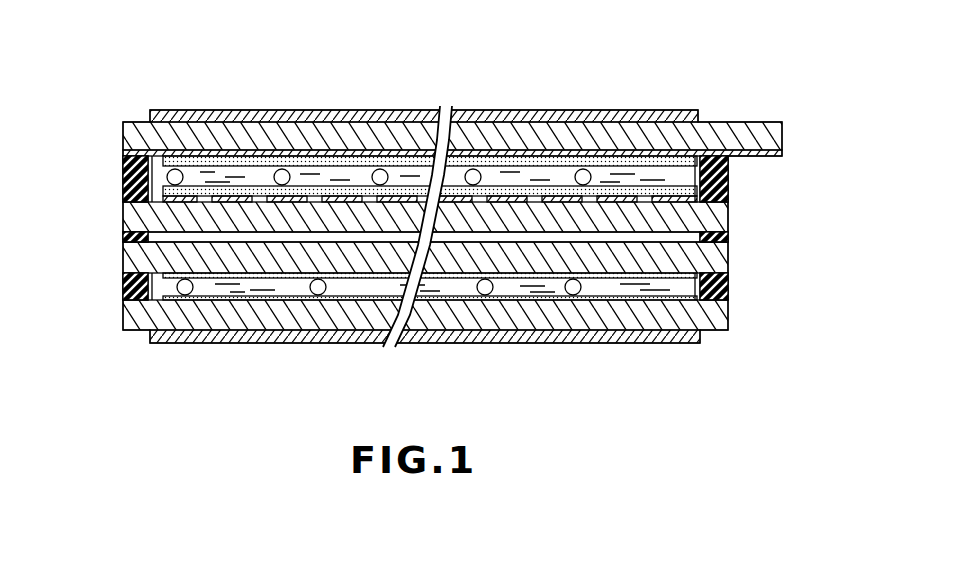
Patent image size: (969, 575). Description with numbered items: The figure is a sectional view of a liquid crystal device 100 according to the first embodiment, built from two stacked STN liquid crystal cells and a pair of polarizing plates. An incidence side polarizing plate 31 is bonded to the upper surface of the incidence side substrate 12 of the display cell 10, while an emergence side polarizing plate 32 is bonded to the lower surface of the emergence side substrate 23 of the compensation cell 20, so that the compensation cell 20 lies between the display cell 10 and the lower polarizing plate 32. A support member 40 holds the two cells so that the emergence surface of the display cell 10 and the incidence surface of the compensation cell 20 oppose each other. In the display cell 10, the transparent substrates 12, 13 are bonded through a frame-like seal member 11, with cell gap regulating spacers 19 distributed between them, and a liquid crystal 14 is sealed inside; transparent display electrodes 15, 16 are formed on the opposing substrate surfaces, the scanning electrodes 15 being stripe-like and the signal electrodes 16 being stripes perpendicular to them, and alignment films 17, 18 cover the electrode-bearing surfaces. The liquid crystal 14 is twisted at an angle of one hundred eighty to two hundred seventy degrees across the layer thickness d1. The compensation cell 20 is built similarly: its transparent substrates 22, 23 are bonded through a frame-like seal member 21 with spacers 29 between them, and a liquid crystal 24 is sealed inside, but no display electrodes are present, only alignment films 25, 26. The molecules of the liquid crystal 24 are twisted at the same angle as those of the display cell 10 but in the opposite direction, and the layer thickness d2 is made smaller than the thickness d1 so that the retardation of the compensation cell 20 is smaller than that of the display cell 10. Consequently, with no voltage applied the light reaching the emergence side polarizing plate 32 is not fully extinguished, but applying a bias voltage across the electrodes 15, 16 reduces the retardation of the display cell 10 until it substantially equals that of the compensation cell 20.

The liquid crystal device 100 is at (755, 106).
The display cell 10 is at (452, 129).
The compensation cell 20 is at (440, 322).
The seal member 11 is at (728, 190).
The incidence side substrate 12 is at (724, 135).
The transparent substrate 13 is at (728, 220).
The liquid crystal 14 is at (615, 190).
The display electrodes 15 is at (487, 153).
The display electrodes 16 is at (345, 165).
The alignment film 17 is at (535, 160).
The alignment film 18 is at (405, 170).
The cell gap regulating spacers 19 is at (282, 168).
The seal member 21 is at (728, 292).
The transparent substrate 22 is at (728, 258).
The emergence side substrate 23 is at (715, 338).
The liquid crystal 24 is at (655, 300).
The alignment film 25 is at (448, 280).
The alignment film 26 is at (525, 300).
The spacers 29 is at (575, 296).
The incidence side polarizing plate 31 is at (298, 110).
The emergence side polarizing plate 32 is at (297, 343).
The support member 40 is at (123, 237).
The liquid crystal layer thickness d1 is at (92, 205).
The liquid crystal layer thickness d2 is at (92, 318).